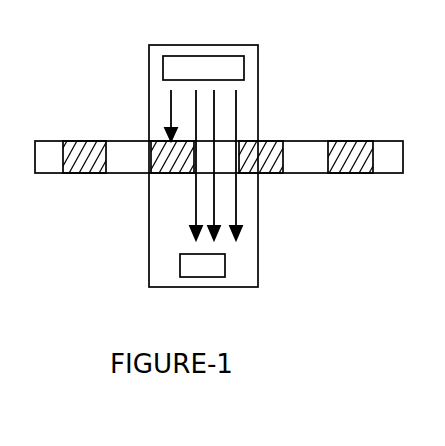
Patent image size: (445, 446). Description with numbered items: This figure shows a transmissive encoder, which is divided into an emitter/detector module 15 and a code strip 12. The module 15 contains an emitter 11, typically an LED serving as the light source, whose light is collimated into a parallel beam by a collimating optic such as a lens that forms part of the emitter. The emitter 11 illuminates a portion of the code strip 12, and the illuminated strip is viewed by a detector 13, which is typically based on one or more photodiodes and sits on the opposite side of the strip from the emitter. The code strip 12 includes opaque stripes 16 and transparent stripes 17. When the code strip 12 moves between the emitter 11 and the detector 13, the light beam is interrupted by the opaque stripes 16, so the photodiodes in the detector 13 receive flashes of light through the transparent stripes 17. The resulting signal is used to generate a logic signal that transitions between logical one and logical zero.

The emitter 11 is at (164, 66).
The code strip 12 is at (224, 179).
The detector 13 is at (210, 271).
The emitter/detector module 15 is at (259, 77).
The opaque stripes 16 is at (337, 171).
The transparent stripes 17 is at (109, 163).